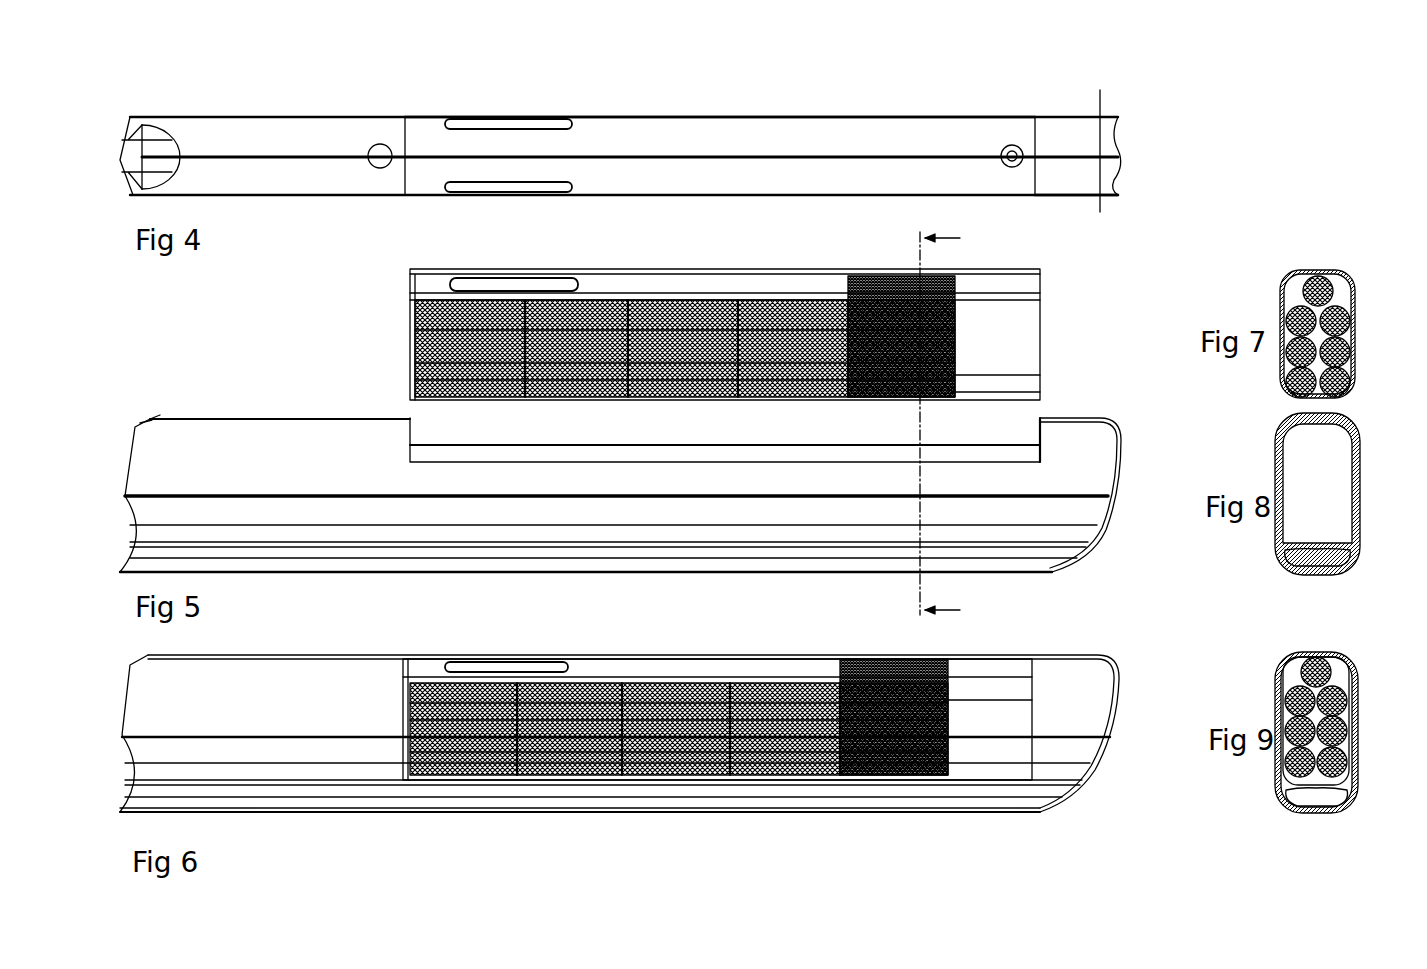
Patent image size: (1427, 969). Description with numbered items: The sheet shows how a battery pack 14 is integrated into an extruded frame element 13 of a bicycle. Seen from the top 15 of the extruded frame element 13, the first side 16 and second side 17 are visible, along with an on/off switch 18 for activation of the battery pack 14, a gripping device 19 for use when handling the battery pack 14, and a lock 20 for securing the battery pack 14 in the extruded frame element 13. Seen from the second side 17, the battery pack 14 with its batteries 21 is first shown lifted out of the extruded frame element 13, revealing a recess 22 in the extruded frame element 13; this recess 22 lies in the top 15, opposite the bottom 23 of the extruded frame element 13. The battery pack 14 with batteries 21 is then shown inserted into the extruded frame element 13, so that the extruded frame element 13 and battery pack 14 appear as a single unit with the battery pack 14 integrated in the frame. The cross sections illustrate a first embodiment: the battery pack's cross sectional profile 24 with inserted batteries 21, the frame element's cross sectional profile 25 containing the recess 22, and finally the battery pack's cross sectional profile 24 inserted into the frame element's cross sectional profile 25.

In FIG. 4, the extruded frame element 13 is at (1075, 130).
In FIG. 5, the extruded frame element 13 is at (1100, 460).
In FIG. 6, the extruded frame element 13 is at (1090, 685).
In FIG. 8, the extruded frame element 13 is at (1355, 485).
In FIG. 4, the battery pack 14 is at (775, 135).
In FIG. 5, the battery pack 14 is at (1025, 325).
In FIG. 6, the battery pack 14 is at (700, 660).
In FIG. 7, the battery pack 14 is at (1355, 340).
In FIG. 4, the top 15 is at (1095, 160).
In FIG. 5, the top 15 is at (1090, 418).
In FIG. 4, the first side 16 is at (680, 117).
In FIG. 4, the second side 17 is at (1075, 200).
In FIG. 5, the second side 17 is at (1075, 510).
In FIG. 4, the on/off switch 18 is at (1012, 144).
In FIG. 4, the gripping device 19 is at (470, 120).
In FIG. 5, the gripping device 19 is at (520, 278).
In FIG. 6, the gripping device 19 is at (520, 663).
In FIG. 4, the lock 20 is at (380, 144).
In FIG. 5, the batteries 21 is at (958, 336).
In FIG. 6, the batteries 21 is at (679, 717).
In FIG. 7, the batteries 21 is at (1352, 292).
In FIG. 5, the recess 22 is at (450, 445).
In FIG. 8, the recess 22 is at (1284, 435).
In FIG. 5, the bottom 23 is at (1030, 574).
In FIG. 6, the bottom 23 is at (912, 812).
In FIG. 7, the battery pack's cross sectional profile 24 is at (1348, 258).
In FIG. 9, the battery pack's cross sectional profile 24 is at (1345, 655).
In FIG. 8, the frame element's cross sectional profile 25 is at (1365, 438).
In FIG. 9, the frame element's cross sectional profile 25 is at (1355, 728).